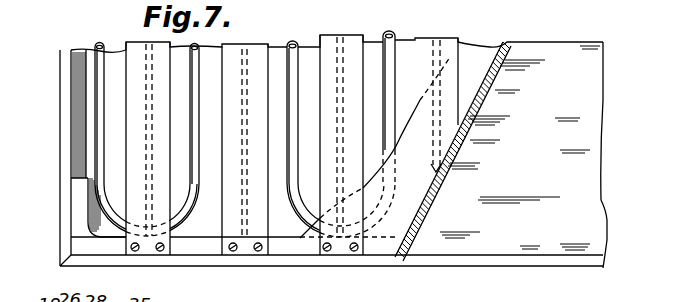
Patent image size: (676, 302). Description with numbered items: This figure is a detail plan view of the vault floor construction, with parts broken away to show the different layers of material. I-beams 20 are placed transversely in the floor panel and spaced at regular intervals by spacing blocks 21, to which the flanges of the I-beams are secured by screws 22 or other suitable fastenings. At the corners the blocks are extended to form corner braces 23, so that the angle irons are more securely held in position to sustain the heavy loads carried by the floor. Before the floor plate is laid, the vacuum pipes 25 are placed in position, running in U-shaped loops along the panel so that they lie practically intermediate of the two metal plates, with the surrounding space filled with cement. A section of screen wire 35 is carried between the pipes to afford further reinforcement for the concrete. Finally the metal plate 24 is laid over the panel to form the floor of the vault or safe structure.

The I-beams 20 is at (261, 53).
The spacing blocks 21 is at (200, 249).
The screws 22 is at (157, 251).
The corner braces 23 is at (80, 217).
The metal plate 24 is at (497, 151).
The vacuum pipes 25 is at (395, 43).
The screen wire 35 is at (595, 134).